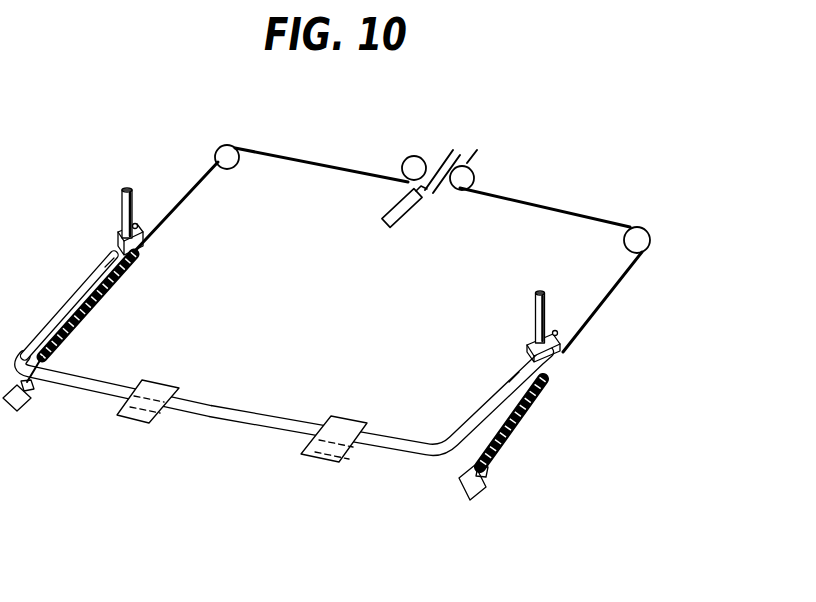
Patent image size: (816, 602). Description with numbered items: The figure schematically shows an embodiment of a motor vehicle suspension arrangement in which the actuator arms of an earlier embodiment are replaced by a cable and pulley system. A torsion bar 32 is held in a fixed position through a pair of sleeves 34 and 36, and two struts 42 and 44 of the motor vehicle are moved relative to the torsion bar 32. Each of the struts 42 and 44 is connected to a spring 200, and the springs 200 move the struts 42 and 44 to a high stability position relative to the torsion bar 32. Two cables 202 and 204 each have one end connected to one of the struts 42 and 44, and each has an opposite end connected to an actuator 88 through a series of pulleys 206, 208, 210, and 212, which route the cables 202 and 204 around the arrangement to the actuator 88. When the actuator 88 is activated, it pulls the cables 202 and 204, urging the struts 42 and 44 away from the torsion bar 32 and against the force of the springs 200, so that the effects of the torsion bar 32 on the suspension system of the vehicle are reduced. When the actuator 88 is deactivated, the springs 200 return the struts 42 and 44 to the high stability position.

The torsion bar 32 is at (194, 418).
The sleeve 34 is at (165, 380).
The sleeve 36 is at (348, 415).
The strut 42 is at (122, 211).
The strut 44 is at (533, 313).
The actuator 88 is at (411, 211).
The spring 200 is at (110, 290).
The cable 202 is at (182, 196).
The cable 204 is at (598, 313).
The pulley 206 is at (227, 155).
The pulley 208 is at (414, 165).
The pulley 210 is at (465, 178).
The pulley 212 is at (637, 240).